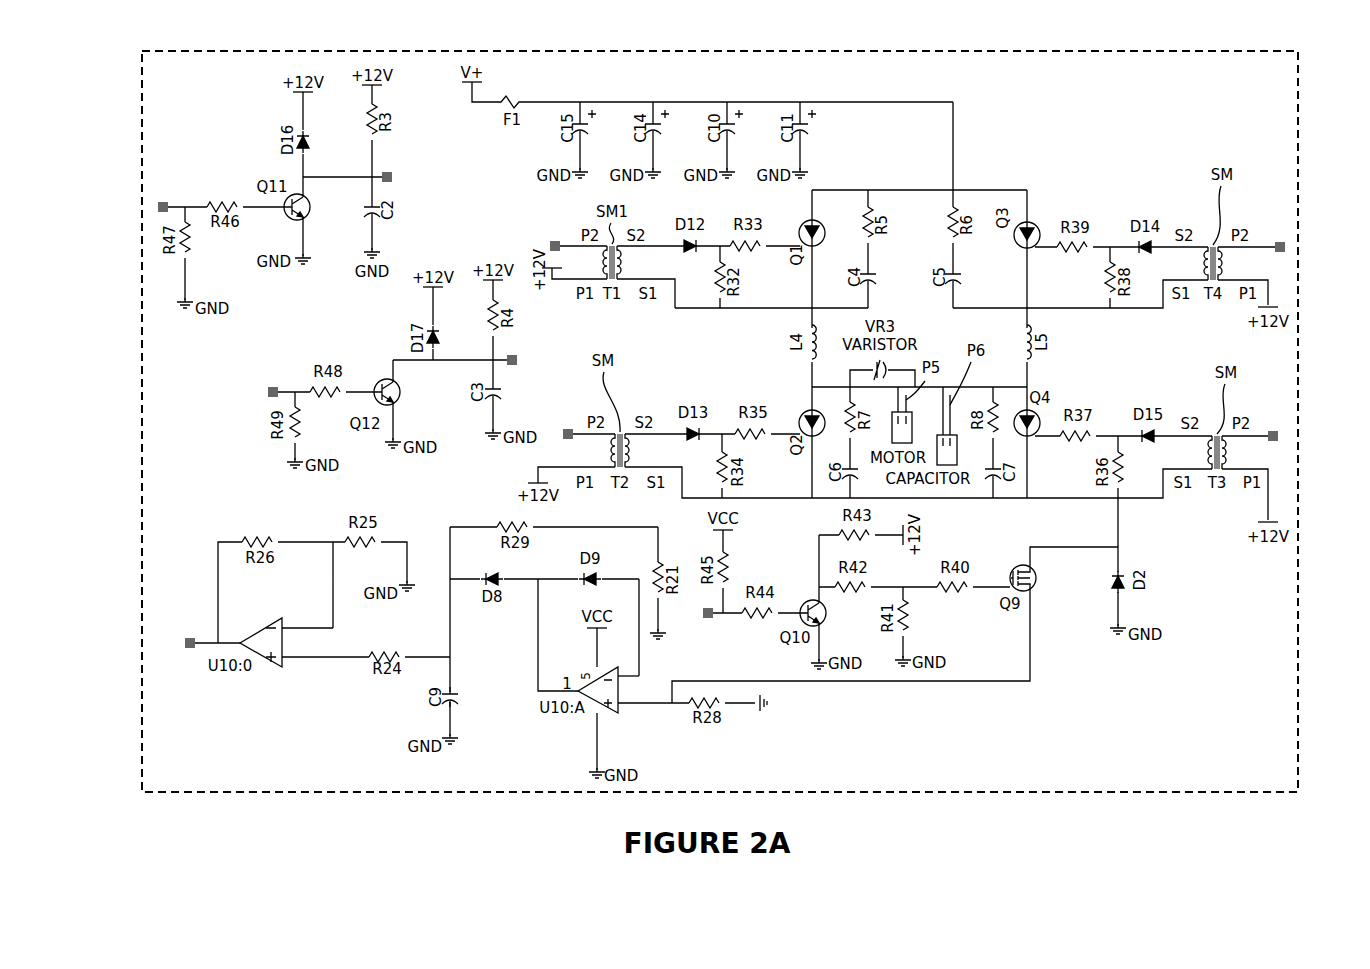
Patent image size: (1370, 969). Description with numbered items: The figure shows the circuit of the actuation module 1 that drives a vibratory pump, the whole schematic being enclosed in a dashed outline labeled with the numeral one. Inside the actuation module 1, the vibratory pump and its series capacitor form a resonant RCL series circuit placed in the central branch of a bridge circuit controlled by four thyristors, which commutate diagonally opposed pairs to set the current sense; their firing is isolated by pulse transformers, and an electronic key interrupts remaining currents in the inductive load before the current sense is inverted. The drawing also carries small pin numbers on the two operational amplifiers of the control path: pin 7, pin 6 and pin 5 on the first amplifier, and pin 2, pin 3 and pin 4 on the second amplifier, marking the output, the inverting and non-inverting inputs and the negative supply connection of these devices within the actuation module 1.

The actuation module 1 is at (1210, 51).
The op-amp U10:A inverting input pin 2 is at (628, 667).
The op-amp U10:A non-inverting input pin 3 is at (653, 695).
The op-amp U10:A negative supply pin 4 is at (604, 741).
The op-amp U10:0 non-inverting input pin 5 is at (325, 667).
The op-amp U10:0 inverting input pin 6 is at (307, 619).
The op-amp U10:0 output pin 7 is at (218, 632).